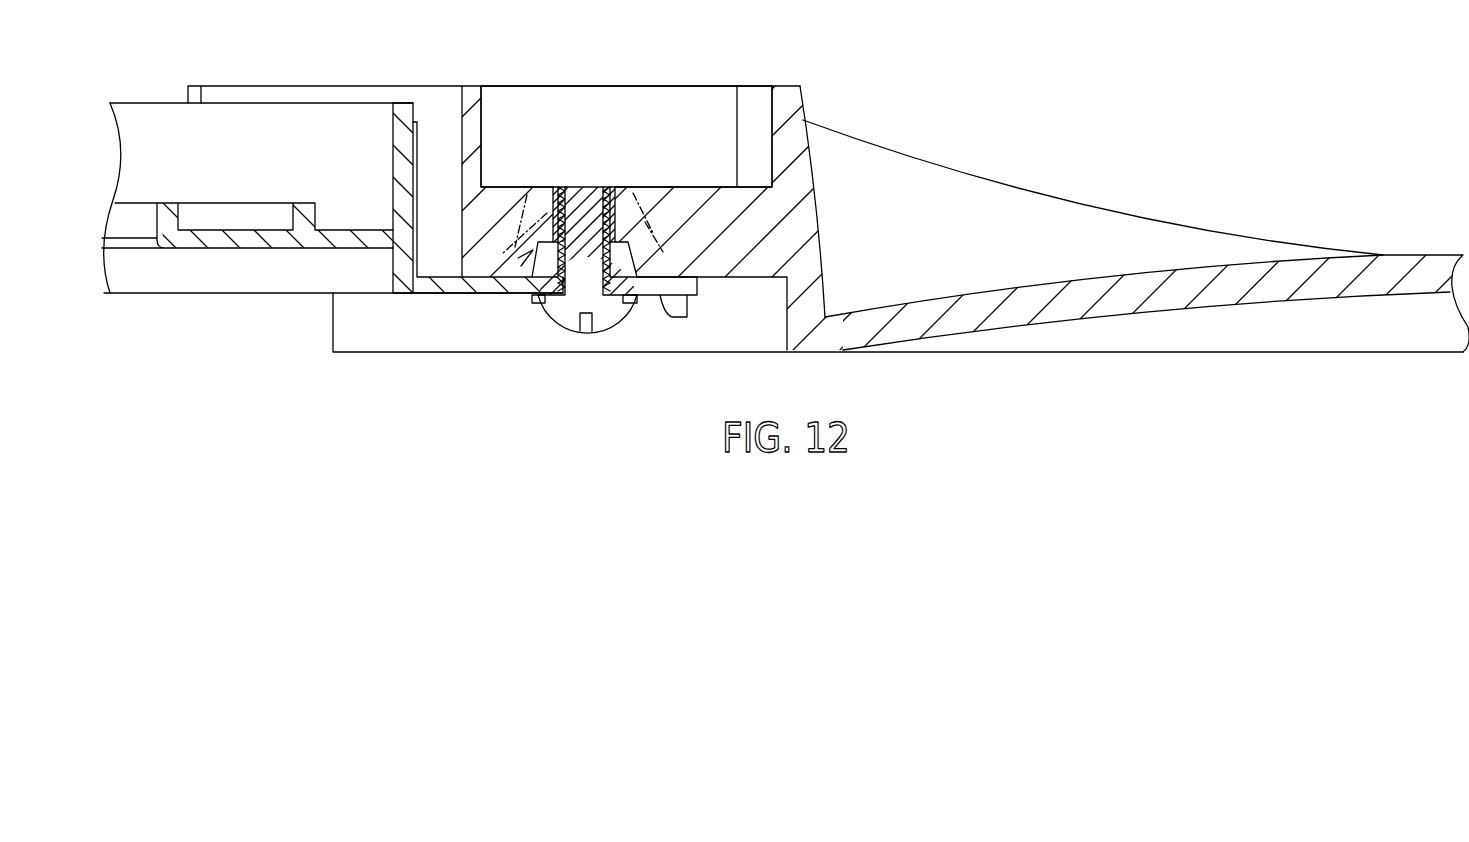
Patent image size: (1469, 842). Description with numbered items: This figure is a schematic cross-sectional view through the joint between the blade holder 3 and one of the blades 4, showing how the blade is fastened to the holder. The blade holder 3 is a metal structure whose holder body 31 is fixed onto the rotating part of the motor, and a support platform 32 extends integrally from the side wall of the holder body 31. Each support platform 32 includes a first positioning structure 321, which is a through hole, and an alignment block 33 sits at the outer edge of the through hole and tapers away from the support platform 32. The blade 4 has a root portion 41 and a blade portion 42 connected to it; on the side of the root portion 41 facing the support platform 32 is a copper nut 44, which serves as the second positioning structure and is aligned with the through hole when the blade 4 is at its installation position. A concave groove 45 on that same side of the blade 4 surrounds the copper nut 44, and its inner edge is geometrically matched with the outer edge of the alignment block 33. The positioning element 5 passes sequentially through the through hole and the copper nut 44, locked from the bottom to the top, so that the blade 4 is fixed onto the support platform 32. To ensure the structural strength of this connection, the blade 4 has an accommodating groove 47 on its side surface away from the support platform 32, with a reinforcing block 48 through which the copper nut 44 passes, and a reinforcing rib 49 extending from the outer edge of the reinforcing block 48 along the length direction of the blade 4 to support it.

The blade holder 3 is at (249, 104).
The holder body 31 is at (405, 120).
The support platform 32 is at (687, 279).
The first positioning structure 321 is at (558, 280).
The alignment block 33 is at (615, 258).
The blade 4 is at (848, 196).
The root portion 41 is at (789, 97).
The blade portion 42 is at (1437, 268).
The copper nut 44 is at (560, 204).
The concave groove 45 is at (533, 250).
The accommodating groove 47 is at (688, 118).
The reinforcing block 48 is at (633, 212).
The reinforcing rib 49 is at (513, 217).
The positioning element 5 is at (585, 189).